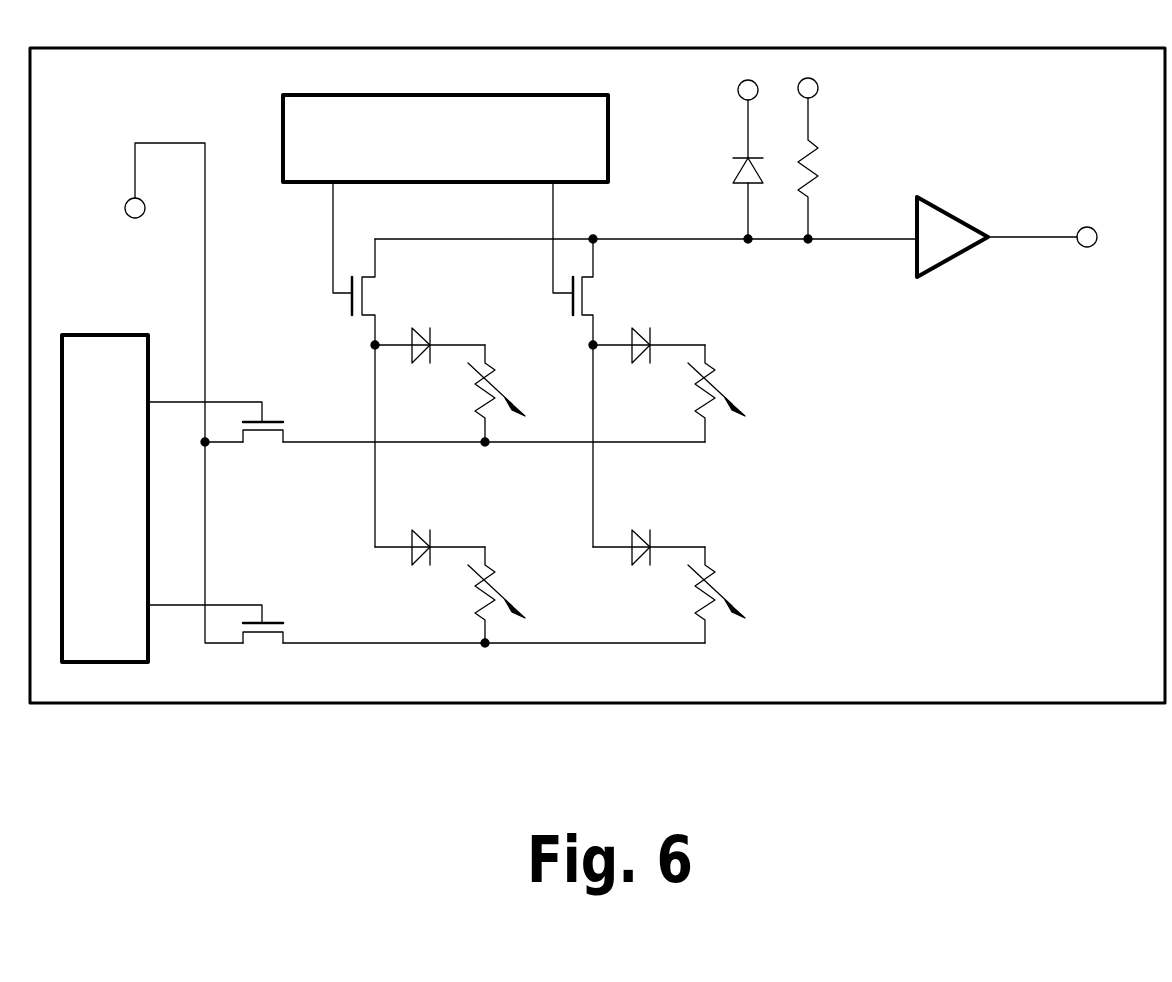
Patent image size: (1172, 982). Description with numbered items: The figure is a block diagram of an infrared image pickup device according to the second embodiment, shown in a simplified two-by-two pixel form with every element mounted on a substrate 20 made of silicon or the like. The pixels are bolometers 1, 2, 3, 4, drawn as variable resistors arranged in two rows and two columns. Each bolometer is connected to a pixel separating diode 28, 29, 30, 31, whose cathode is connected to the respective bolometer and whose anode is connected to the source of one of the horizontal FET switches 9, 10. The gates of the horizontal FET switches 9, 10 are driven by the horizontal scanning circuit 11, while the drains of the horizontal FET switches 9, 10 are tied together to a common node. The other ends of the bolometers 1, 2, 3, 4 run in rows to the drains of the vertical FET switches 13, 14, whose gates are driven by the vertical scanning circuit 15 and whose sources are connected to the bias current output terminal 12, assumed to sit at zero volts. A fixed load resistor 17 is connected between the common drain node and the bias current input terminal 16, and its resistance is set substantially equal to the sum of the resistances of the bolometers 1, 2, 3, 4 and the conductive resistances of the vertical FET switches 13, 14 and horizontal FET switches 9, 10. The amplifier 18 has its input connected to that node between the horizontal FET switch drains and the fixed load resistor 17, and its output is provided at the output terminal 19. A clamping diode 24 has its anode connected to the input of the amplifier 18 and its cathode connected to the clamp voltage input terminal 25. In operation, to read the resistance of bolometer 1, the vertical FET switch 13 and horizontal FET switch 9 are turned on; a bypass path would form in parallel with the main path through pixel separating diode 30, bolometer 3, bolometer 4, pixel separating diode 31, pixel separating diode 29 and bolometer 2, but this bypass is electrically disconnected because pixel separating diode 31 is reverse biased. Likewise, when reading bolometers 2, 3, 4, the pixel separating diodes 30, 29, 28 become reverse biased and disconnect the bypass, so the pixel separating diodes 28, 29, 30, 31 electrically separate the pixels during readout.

The bolometer 1 is at (503, 383).
The bolometer 2 is at (723, 383).
The bolometer 3 is at (503, 585).
The bolometer 4 is at (723, 585).
The horizontal FET switch 9 is at (320, 278).
The horizontal FET switch 10 is at (547, 276).
The horizontal scanning circuit 11 is at (610, 184).
The bias current output terminal 12 is at (145, 214).
The vertical FET switch 13 is at (250, 388).
The vertical FET switch 14 is at (250, 600).
The vertical scanning circuit 15 is at (150, 646).
The bias current input terminal 16 is at (818, 89).
The fixed load resistor 17 is at (820, 171).
The amplifier 18 is at (950, 212).
The output terminal 19 is at (1086, 227).
The substrate 20 is at (972, 705).
The clamping diode 24 is at (730, 166).
The clamp voltage input terminal 25 is at (738, 90).
The pixel separating diode 28 is at (438, 334).
The pixel separating diode 29 is at (655, 334).
The pixel separating diode 30 is at (438, 534).
The pixel separating diode 31 is at (660, 534).